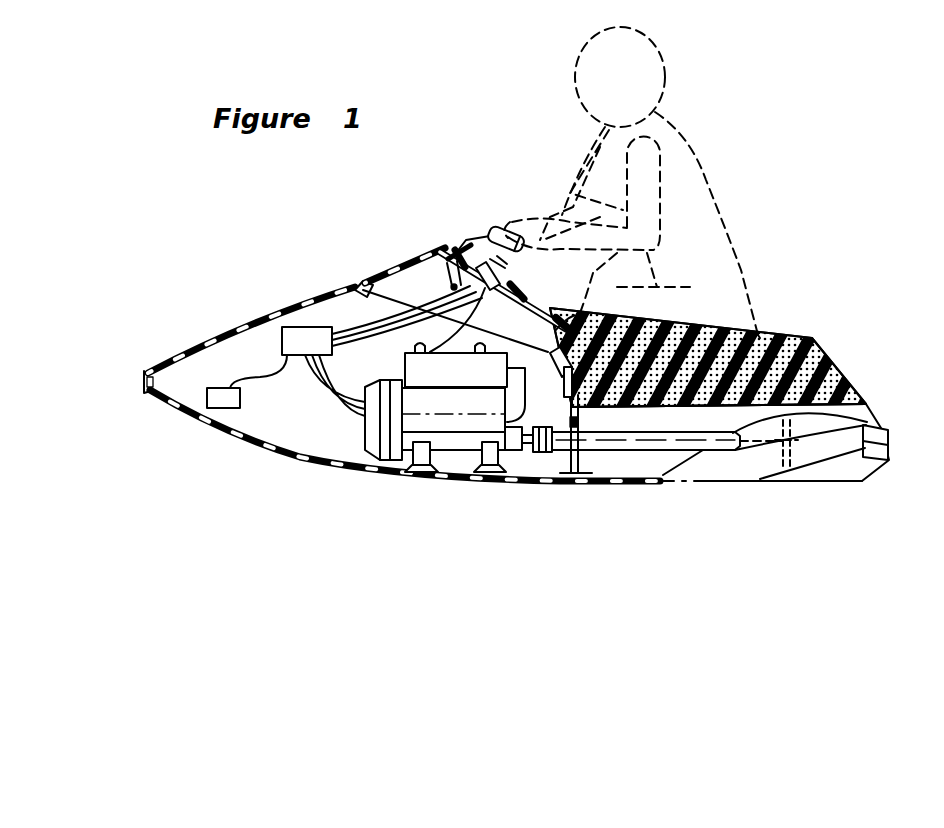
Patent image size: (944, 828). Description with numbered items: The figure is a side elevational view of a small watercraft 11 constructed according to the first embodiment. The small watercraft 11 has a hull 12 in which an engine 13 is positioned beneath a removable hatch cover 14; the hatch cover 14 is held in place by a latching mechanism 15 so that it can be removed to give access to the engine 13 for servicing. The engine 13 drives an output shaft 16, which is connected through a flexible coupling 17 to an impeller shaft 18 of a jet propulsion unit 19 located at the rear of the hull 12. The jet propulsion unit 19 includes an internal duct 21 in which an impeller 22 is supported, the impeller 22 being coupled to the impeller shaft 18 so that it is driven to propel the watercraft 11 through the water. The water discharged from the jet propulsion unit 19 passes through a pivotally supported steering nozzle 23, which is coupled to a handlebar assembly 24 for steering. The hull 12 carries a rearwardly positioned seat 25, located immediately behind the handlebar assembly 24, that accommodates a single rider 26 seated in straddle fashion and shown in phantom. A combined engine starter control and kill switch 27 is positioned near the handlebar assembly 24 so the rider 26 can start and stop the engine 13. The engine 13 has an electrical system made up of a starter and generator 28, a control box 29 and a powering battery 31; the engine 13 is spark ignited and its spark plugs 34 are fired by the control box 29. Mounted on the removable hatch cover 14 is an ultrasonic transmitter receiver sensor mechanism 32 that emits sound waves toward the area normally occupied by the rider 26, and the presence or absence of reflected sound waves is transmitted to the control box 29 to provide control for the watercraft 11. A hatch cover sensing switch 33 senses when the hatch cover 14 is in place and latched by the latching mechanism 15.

The small watercraft 11 is at (212, 320).
The hull 12 is at (175, 415).
The engine 13 is at (445, 448).
The hatch cover 14 is at (407, 262).
The latching mechanism 15 is at (583, 380).
The output shaft 16 is at (531, 448).
The flexible coupling 17 is at (548, 452).
The impeller shaft 18 is at (740, 455).
The jet propulsion unit 19 is at (862, 412).
The internal duct 21 is at (762, 468).
The impeller 22 is at (803, 476).
The steering nozzle 23 is at (880, 458).
The handlebar assembly 24 is at (500, 244).
The seat 25 is at (828, 346).
The rider 26 is at (735, 210).
The combined engine starter control and kill switch 27 is at (503, 270).
The starter and generator 28 is at (375, 458).
The control box 29 is at (298, 352).
The powering battery 31 is at (228, 396).
The ultrasonic transmitter receiver sensor mechanism 32 is at (550, 287).
The hatch cover sensing switch 33 is at (566, 365).
The spark plugs 34 is at (488, 352).